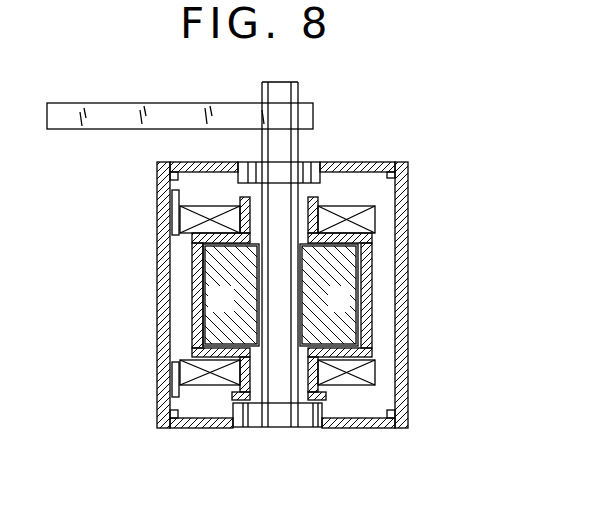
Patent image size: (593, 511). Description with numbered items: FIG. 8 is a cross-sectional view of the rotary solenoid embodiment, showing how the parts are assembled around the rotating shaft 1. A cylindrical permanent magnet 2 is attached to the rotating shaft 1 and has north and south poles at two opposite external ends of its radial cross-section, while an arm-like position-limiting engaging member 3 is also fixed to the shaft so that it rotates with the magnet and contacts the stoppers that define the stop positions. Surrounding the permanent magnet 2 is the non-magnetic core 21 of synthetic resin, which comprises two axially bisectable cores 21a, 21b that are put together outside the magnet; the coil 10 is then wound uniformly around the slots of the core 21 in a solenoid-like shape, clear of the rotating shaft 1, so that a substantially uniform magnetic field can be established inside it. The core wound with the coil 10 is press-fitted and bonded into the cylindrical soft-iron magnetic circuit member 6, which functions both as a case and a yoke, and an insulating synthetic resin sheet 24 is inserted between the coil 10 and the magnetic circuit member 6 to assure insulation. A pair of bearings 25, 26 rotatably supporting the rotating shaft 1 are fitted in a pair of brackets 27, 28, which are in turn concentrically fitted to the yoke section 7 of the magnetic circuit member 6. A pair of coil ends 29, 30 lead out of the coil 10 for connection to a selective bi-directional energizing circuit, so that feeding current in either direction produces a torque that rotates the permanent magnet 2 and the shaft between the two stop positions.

The rotating shaft 1 is at (303, 140).
The permanent magnet 2 is at (347, 262).
The engaging member 3 is at (101, 108).
The magnetic circuit member 6 is at (412, 310).
The yoke section 7 is at (399, 335).
The coil 10 is at (185, 216).
The non-magnetic core 21 is at (373, 275).
The core 21a is at (191, 267).
The core 21b is at (250, 393).
The insulating synthetic resin sheet 24 is at (174, 370).
The bearing 25 is at (306, 163).
The bearing 26 is at (283, 428).
The bracket 27 is at (173, 163).
The bracket 28 is at (163, 423).
The coil end 29 is at (228, 394).
The coil end 30 is at (336, 389).